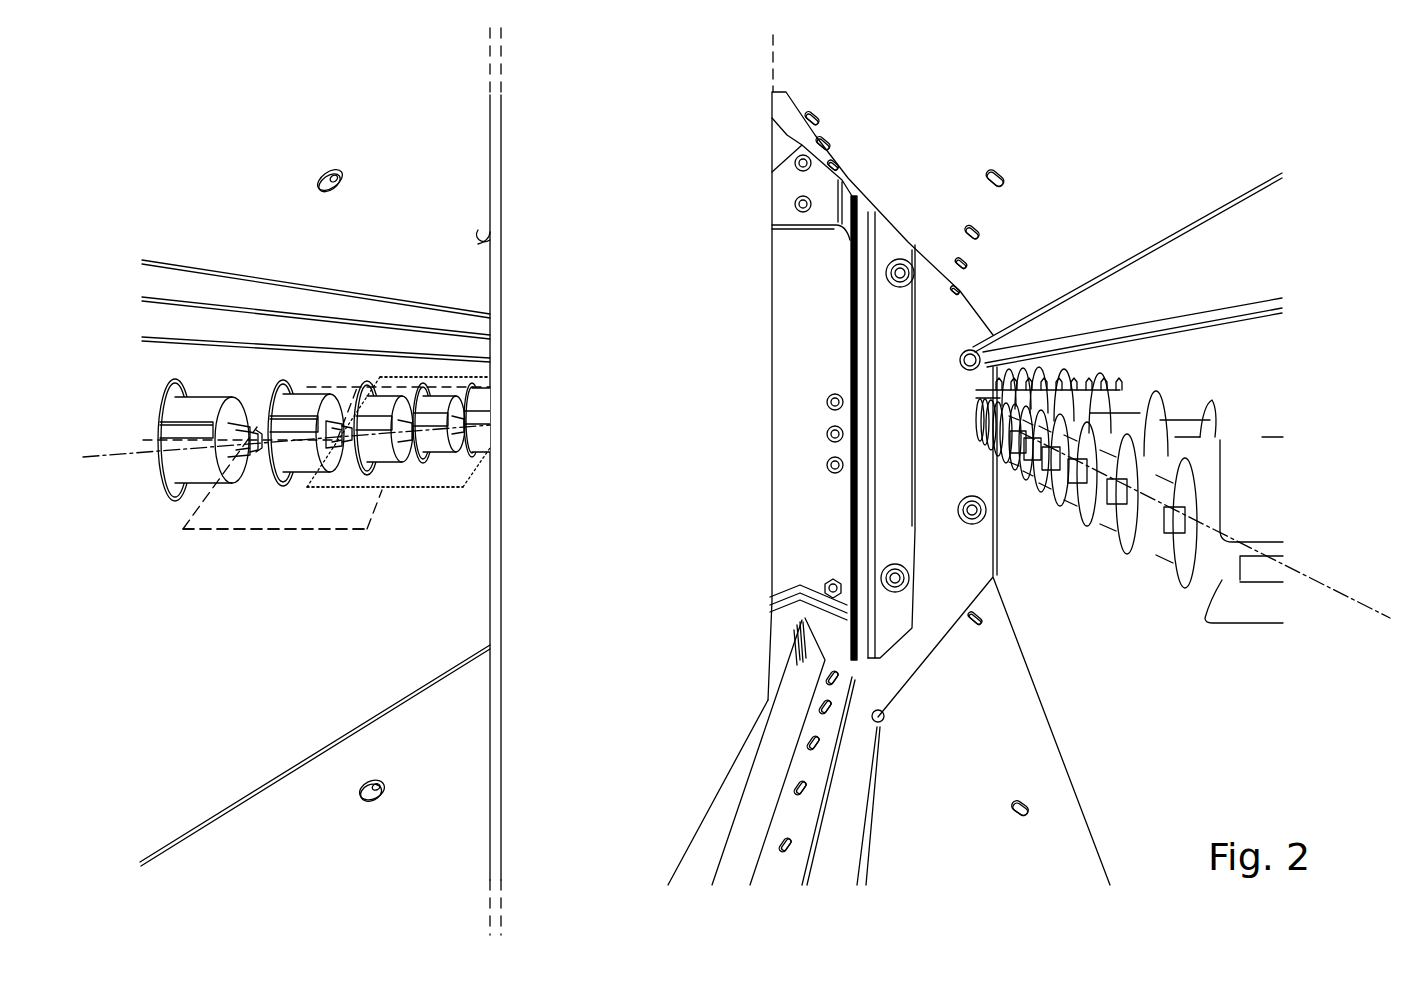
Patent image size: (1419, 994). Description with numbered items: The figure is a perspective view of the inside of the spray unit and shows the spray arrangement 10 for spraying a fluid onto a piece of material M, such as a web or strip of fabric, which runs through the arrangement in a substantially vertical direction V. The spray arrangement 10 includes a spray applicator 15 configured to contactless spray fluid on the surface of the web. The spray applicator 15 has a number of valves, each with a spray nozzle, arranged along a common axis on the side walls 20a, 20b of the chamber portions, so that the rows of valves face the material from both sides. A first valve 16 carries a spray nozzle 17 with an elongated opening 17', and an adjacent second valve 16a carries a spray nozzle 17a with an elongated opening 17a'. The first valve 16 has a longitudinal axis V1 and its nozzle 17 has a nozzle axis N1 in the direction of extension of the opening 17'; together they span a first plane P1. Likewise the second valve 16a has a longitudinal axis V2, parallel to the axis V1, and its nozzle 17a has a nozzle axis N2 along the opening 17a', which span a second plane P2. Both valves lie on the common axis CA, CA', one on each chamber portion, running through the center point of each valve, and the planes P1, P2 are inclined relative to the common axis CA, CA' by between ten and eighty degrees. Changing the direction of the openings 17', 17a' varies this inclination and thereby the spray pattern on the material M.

The spray arrangement 10 is at (207, 133).
The spray applicator 15 is at (1232, 626).
The first valve 16 is at (238, 398).
The second valve 16a is at (314, 392).
The spray nozzle 17 is at (719, 545).
The elongated opening 17' is at (245, 508).
The spray nozzle 17a is at (349, 348).
The elongated opening 17a' is at (386, 353).
The side wall 20a is at (1190, 386).
The side wall 20b is at (382, 641).
The common axis CA is at (284, 408).
The common axis CA' is at (1205, 525).
The longitudinal axis V1 is at (143, 440).
The longitudinal axis V2 is at (420, 430).
The nozzle axis N1 is at (183, 528).
The nozzle axis N2 is at (327, 470).
The first plane P1 is at (183, 530).
The second plane P2 is at (463, 488).
The material M is at (652, 292).
The vertical direction V is at (713, 14).